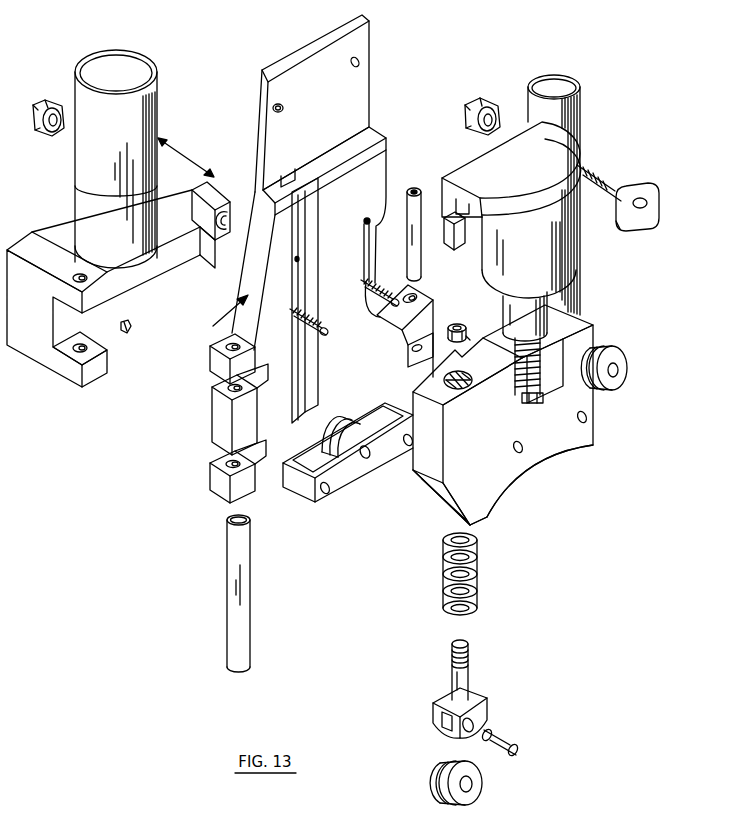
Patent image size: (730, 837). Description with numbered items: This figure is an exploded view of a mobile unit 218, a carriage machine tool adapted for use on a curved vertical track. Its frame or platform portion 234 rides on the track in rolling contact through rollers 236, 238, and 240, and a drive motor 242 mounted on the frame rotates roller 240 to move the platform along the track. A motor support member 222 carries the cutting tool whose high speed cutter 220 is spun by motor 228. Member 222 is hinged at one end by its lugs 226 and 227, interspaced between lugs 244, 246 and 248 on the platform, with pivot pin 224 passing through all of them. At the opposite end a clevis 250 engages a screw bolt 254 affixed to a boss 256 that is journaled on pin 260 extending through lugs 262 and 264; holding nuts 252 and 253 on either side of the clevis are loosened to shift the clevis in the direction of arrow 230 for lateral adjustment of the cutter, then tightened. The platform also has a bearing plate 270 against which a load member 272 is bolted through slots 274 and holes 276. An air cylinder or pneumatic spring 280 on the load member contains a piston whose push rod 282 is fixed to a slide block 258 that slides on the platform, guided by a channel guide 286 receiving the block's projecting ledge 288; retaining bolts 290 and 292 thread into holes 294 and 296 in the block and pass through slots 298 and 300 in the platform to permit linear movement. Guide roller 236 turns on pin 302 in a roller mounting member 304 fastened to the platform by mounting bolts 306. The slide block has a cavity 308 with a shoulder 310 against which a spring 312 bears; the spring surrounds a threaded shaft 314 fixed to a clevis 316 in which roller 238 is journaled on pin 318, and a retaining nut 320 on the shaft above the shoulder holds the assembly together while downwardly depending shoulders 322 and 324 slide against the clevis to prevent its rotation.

The mobile unit 218 is at (218, 315).
The high speed cutter 220 is at (126, 335).
The motor support member 222 is at (133, 293).
The pivot pin 224 is at (227, 590).
The lug 226 is at (68, 296).
The lug 227 is at (70, 368).
The motor 228 is at (116, 159).
The arrow 230 is at (185, 148).
The frame or platform portion 234 is at (380, 153).
The guide roller 236 is at (343, 415).
The guide roller 238 is at (473, 789).
The roller 240 is at (626, 372).
The motor 242 is at (579, 100).
The lug 244 is at (223, 364).
The lug 246 is at (223, 418).
The lug 248 is at (228, 481).
The clevis 250 is at (208, 197).
The holding nut 252 is at (485, 100).
The holding nut 253 is at (44, 104).
The screw bolt 254 is at (605, 173).
The boss 256 is at (649, 208).
The slide block 258 is at (438, 455).
The pin 260 is at (413, 188).
The lug 262 is at (425, 317).
The lug 264 is at (430, 373).
The bearing plate 270 is at (353, 43).
The load member 272 is at (511, 169).
The slot 274 is at (464, 219).
The hole 276 is at (283, 106).
The air cylinder or pneumatic spring 280 is at (529, 279).
The push rod 282 is at (523, 403).
The channel guide 286 is at (297, 188).
The projecting ledge 288 is at (469, 337).
The retaining bolt 290 is at (383, 282).
The retaining bolt 292 is at (323, 331).
The hole 294 is at (578, 419).
The hole 296 is at (514, 451).
The slot 298 is at (298, 263).
The slot 300 is at (366, 220).
The pin 302 is at (368, 458).
The roller mounting member 304 is at (347, 480).
The mounting bolt 306 is at (323, 496).
The cavity 308 is at (468, 374).
The shoulder 310 is at (456, 388).
The spring 312 is at (476, 578).
The threaded shaft 314 is at (470, 664).
The clevis 316 is at (481, 709).
The pin 318 is at (514, 745).
The retaining nut 320 is at (446, 332).
The shoulder 322 is at (438, 515).
The shoulder 324 is at (478, 505).